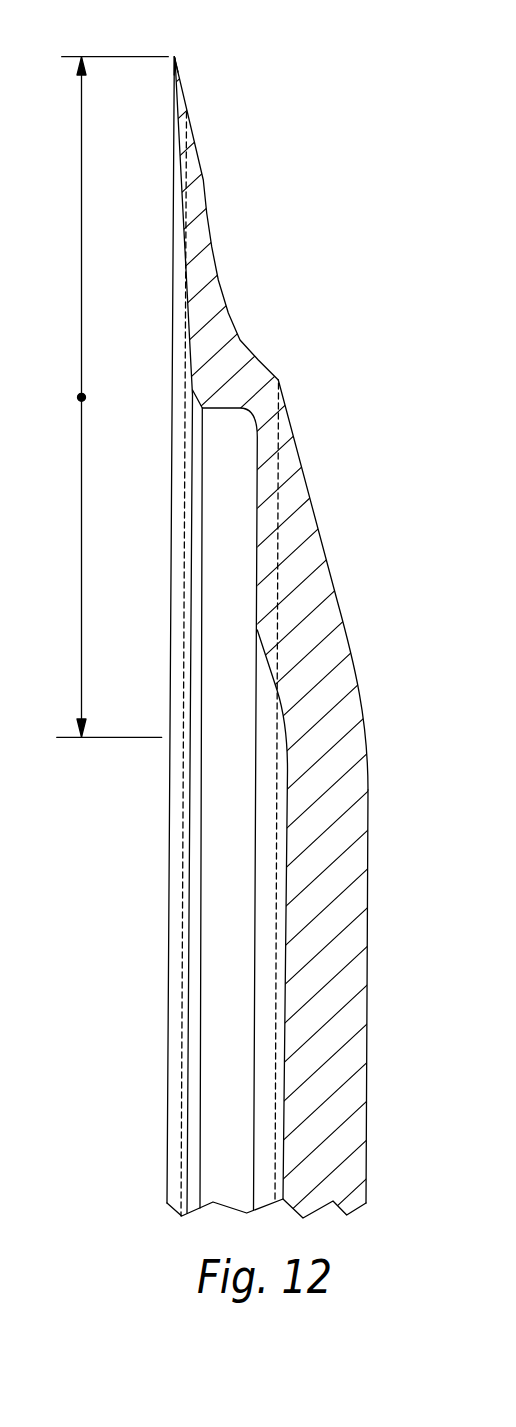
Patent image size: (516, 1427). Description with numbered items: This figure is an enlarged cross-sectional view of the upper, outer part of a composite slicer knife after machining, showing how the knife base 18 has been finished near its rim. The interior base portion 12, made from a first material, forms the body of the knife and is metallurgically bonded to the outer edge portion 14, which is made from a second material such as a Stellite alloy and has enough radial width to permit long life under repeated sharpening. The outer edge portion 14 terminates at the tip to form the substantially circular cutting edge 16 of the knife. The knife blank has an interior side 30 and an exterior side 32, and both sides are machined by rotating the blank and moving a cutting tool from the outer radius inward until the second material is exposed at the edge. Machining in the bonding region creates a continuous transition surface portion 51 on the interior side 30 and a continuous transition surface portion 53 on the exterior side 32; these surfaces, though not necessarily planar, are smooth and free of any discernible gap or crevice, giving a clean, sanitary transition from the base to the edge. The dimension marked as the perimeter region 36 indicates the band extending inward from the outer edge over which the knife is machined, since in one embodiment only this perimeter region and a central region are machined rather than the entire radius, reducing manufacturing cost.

The interior base portion 12 is at (368, 912).
The outer edge portion 14 is at (181, 73).
The cutting edge 16 is at (174, 57).
The knife base 18 is at (225, 683).
The interior side 30 is at (254, 498).
The exterior side 32 is at (334, 583).
The perimeter region 36 is at (82, 397).
The continuous transition surface portion 51 is at (174, 122).
The continuous transition surface portion 53 is at (186, 97).